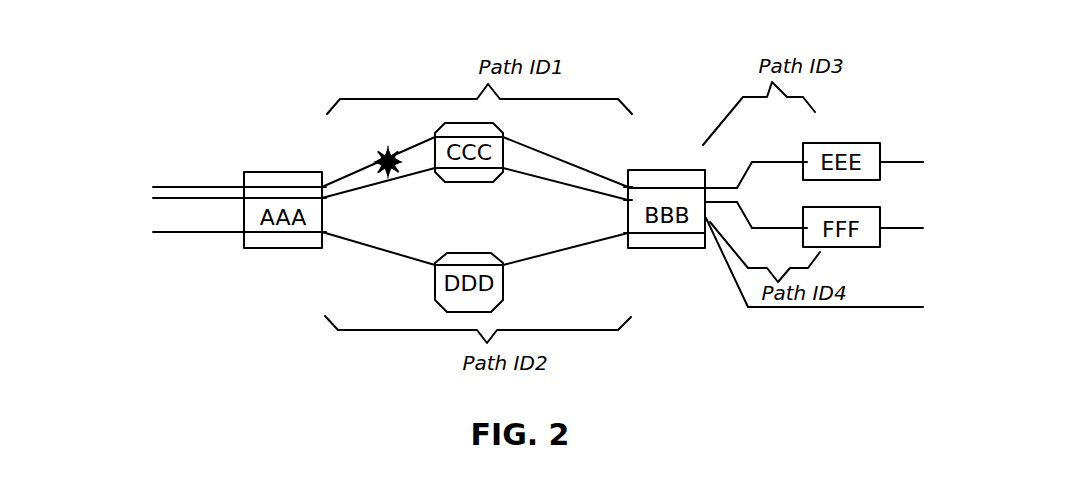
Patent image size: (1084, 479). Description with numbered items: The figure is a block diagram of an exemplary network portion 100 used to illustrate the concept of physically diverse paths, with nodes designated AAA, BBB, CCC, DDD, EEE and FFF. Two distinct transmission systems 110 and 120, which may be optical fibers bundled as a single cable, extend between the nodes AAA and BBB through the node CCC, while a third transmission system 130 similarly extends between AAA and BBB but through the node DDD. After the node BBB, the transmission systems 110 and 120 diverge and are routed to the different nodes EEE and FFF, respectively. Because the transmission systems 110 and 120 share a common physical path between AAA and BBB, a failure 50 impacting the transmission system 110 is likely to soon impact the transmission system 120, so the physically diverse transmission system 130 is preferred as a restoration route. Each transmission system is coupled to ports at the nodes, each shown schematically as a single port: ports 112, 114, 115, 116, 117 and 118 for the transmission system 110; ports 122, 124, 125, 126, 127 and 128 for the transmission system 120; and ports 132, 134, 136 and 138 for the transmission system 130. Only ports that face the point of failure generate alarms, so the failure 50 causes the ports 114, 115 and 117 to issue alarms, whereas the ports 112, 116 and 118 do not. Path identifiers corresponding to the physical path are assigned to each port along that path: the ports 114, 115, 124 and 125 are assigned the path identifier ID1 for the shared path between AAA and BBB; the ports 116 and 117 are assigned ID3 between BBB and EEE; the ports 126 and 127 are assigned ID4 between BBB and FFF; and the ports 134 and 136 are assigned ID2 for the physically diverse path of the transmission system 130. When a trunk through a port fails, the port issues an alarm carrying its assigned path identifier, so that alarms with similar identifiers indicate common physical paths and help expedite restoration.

The network portion 100 is at (272, 348).
The transmission system 110 is at (168, 186).
The transmission system 120 is at (168, 200).
The transmission system 130 is at (168, 233).
The port 112 is at (243, 187).
The port 122 is at (243, 199).
The port 132 is at (243, 233).
The port 114 is at (323, 187).
The port 124 is at (323, 199).
The port 134 is at (323, 233).
The failure 50 is at (390, 150).
The port 115 is at (627, 185).
The port 125 is at (627, 201).
The port 136 is at (627, 238).
The port 116 is at (706, 188).
The port 126 is at (708, 204).
The port 138 is at (706, 235).
The port 117 is at (800, 160).
The port 127 is at (800, 228).
The port 118 is at (882, 160).
The port 128 is at (882, 230).